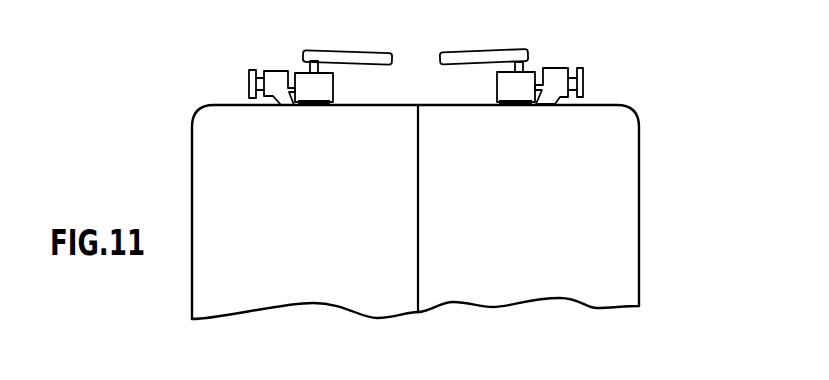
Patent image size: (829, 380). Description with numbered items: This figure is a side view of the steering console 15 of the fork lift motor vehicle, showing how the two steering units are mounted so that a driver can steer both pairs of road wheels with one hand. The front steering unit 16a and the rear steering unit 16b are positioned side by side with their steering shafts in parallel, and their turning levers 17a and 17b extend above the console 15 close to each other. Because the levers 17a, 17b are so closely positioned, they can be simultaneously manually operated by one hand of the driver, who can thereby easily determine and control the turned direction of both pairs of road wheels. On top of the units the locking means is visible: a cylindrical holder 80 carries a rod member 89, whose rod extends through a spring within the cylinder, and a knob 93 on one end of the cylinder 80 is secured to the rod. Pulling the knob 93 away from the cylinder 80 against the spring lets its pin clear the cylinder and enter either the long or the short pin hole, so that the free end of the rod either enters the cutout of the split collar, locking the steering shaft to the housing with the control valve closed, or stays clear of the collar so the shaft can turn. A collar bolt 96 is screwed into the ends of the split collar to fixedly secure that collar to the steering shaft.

The steering console 15 is at (666, 170).
The front steering unit 16a is at (313, 208).
The rear steering unit 16b is at (538, 207).
The lever 17a is at (366, 50).
The lever 17b is at (480, 49).
The cylindrical holder 80 is at (280, 72).
The rod member 89 is at (236, 70).
The knob 93 is at (255, 68).
The collar bolt 96 is at (330, 87).